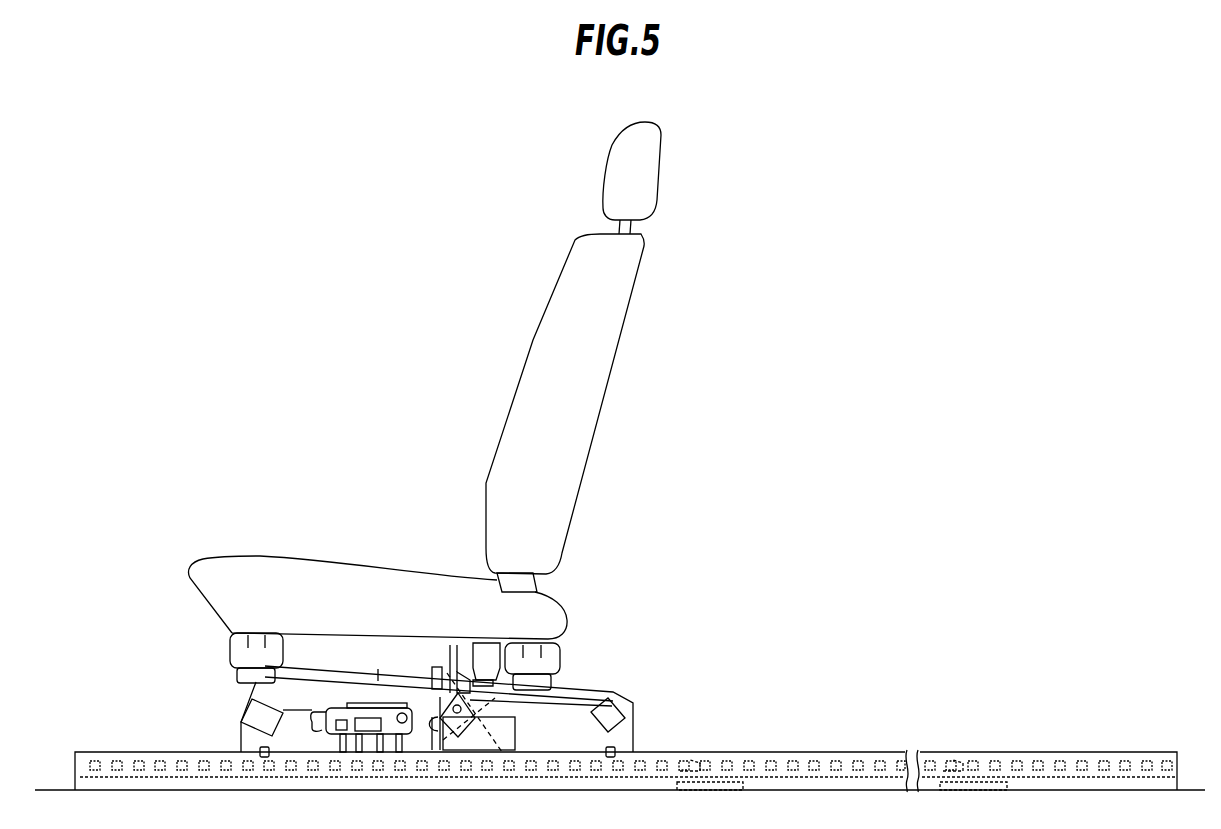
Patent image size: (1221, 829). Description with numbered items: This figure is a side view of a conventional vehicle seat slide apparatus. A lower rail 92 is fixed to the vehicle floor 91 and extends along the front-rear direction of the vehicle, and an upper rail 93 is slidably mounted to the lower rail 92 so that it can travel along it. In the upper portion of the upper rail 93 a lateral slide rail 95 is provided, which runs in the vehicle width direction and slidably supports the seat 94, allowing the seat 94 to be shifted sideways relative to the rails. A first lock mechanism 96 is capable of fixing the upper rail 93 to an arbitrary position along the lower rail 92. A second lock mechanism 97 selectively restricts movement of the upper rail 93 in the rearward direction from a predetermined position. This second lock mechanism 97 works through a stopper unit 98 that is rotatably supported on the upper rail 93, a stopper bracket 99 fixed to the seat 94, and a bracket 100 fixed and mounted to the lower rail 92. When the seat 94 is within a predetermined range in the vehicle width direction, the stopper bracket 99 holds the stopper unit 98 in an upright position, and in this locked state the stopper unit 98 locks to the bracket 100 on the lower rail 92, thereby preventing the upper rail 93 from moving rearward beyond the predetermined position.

The vehicle floor 91 is at (50, 788).
The lower rail 92 is at (1128, 752).
The upper rail 93 is at (638, 716).
The seat 94 is at (587, 455).
The lateral slide rail 95 is at (228, 648).
The first lock mechanism 96 is at (355, 700).
The second lock mechanism 97 is at (432, 657).
The stopper unit 98 is at (453, 664).
The stopper bracket 99 is at (487, 643).
The bracket 100 is at (706, 752).